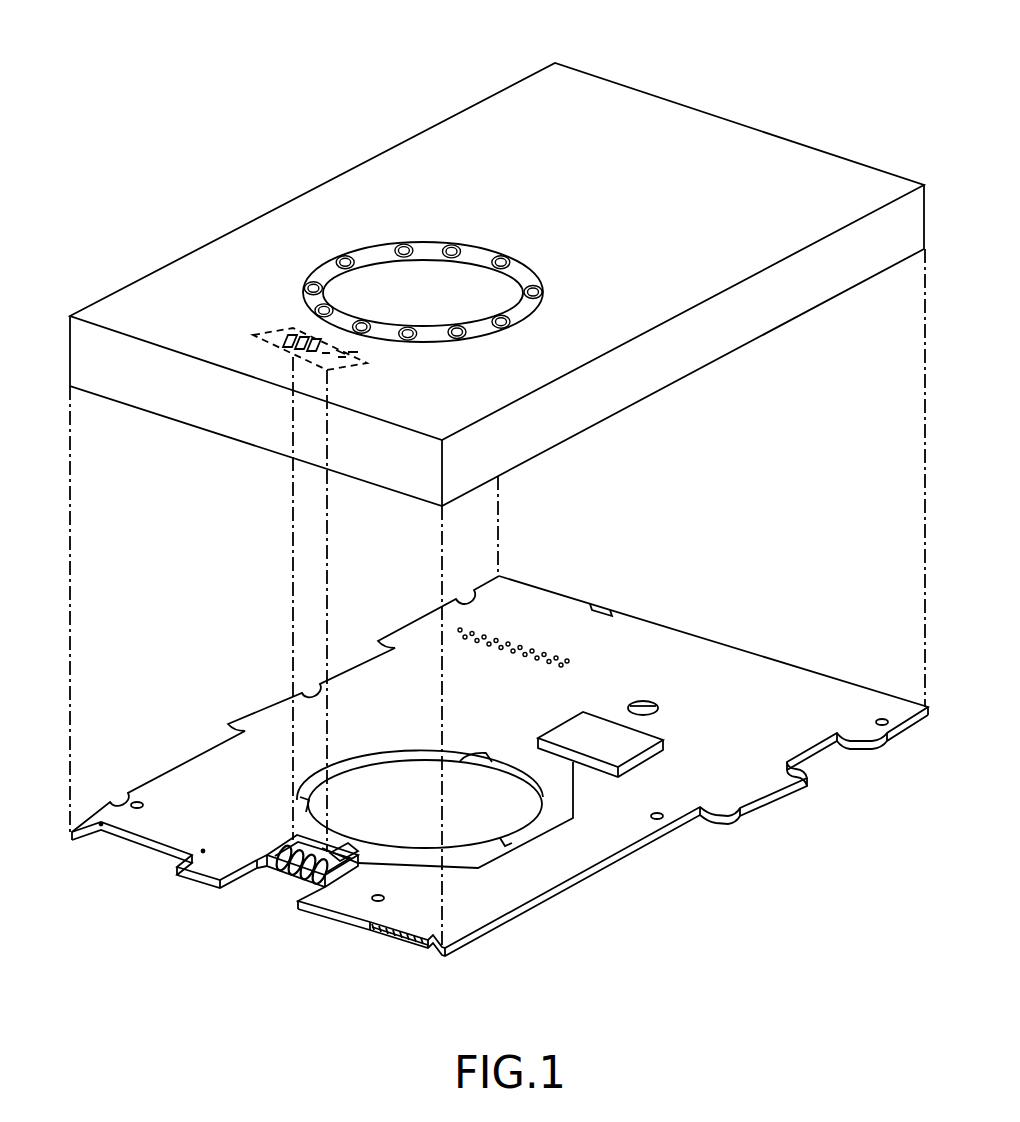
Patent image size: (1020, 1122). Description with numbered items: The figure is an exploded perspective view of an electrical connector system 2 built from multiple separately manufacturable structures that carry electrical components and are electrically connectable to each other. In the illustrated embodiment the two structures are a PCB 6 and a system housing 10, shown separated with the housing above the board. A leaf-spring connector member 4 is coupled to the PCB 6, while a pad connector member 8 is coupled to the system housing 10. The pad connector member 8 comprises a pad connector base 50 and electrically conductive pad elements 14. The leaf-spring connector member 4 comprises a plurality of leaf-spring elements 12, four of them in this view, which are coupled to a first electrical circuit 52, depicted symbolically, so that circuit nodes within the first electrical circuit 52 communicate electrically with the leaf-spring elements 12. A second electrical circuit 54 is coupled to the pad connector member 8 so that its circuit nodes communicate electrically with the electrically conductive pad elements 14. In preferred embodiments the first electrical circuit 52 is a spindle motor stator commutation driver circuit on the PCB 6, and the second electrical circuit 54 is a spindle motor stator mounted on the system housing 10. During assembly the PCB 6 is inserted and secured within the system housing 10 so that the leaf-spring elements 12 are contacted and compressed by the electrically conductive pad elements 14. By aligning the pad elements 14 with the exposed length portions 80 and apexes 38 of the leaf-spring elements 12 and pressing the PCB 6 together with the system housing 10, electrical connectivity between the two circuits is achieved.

The electrical connector system 2 is at (262, 136).
The system housing 10 is at (813, 158).
The second electrical circuit 54 is at (423, 250).
The pad connector member 8 is at (262, 327).
The pad connector base 50 is at (273, 350).
The electrically conductive pad elements 14 is at (328, 349).
The PCB 6 is at (773, 670).
The first electrical circuit 52 is at (592, 728).
The leaf-spring connector member 4 is at (316, 848).
The leaf-spring elements 12 is at (295, 850).
The exposed length portions 80 is at (273, 850).
The apexes 38 is at (330, 857).